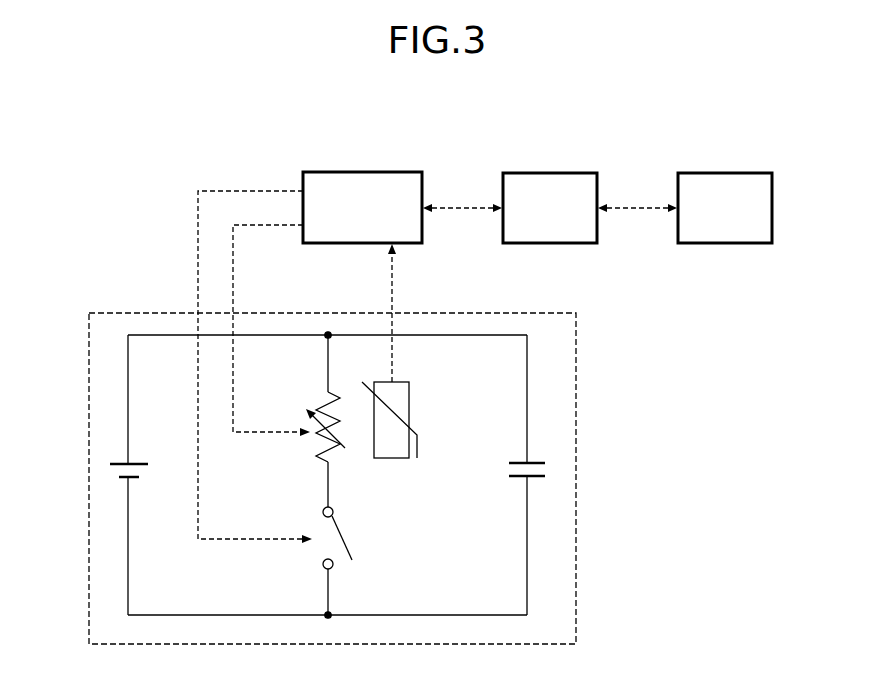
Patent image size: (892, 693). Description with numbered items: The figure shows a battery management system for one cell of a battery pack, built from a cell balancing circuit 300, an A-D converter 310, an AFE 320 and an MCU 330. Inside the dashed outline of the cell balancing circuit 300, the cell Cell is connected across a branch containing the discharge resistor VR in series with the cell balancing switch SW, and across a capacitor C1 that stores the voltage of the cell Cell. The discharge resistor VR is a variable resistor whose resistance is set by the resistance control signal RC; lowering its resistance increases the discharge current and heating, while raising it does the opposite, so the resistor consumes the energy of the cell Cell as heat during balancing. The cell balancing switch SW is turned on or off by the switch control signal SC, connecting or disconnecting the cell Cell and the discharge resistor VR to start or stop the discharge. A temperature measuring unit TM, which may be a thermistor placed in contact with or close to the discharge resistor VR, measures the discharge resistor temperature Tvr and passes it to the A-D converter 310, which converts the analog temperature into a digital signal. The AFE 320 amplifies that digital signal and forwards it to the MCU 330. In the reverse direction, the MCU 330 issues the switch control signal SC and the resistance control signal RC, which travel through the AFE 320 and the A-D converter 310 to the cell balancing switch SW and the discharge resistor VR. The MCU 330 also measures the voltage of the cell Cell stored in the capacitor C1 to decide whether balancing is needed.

The cell balancing circuit 300 is at (577, 405).
The A-D converter 310 is at (363, 172).
The AFE (analog front end) 320 is at (550, 173).
The MCU (microcontroller unit) 330 is at (726, 173).
The cell Cell is at (141, 475).
The capacitor C1 is at (511, 475).
The discharge resistor VR is at (315, 421).
The cell balancing switch SW is at (355, 561).
The temperature measuring unit TM is at (407, 420).
The switch control signal SC is at (239, 367).
The resistance control signal RC is at (271, 330).
The discharge resistor temperature Tvr is at (408, 313).